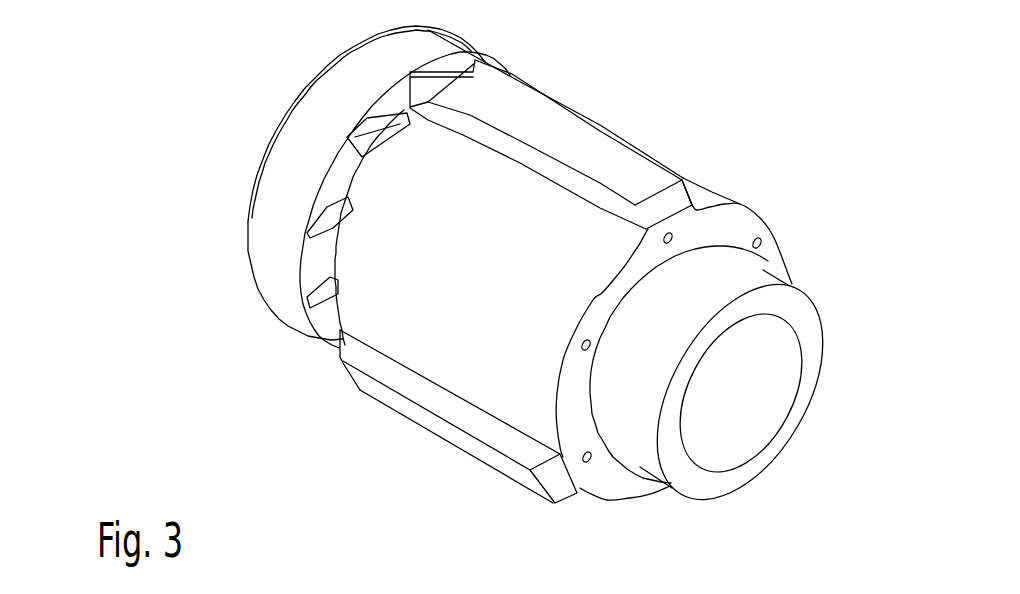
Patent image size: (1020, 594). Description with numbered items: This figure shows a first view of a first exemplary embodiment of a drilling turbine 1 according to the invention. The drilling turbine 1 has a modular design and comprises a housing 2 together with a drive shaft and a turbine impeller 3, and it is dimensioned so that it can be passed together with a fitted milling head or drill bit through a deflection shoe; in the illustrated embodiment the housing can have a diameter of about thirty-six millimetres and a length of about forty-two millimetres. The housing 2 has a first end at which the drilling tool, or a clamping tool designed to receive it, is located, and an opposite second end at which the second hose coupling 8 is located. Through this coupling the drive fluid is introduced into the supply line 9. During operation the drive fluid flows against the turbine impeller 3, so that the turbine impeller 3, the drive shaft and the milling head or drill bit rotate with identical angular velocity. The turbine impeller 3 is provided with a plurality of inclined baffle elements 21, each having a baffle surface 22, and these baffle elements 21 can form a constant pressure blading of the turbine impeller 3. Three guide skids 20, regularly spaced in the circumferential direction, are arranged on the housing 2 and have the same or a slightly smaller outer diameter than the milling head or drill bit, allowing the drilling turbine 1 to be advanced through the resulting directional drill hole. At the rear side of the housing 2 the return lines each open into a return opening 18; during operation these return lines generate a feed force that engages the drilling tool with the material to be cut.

The drilling turbine 1 is at (680, 91).
The housing 2 is at (367, 308).
The turbine impeller 3 is at (267, 205).
The second hose coupling 8 is at (803, 353).
The supply line 9 is at (730, 397).
The return opening 18 is at (760, 242).
The guide skid 20 is at (457, 433).
The baffle element 21 is at (367, 133).
The baffle surface 22 is at (387, 143).